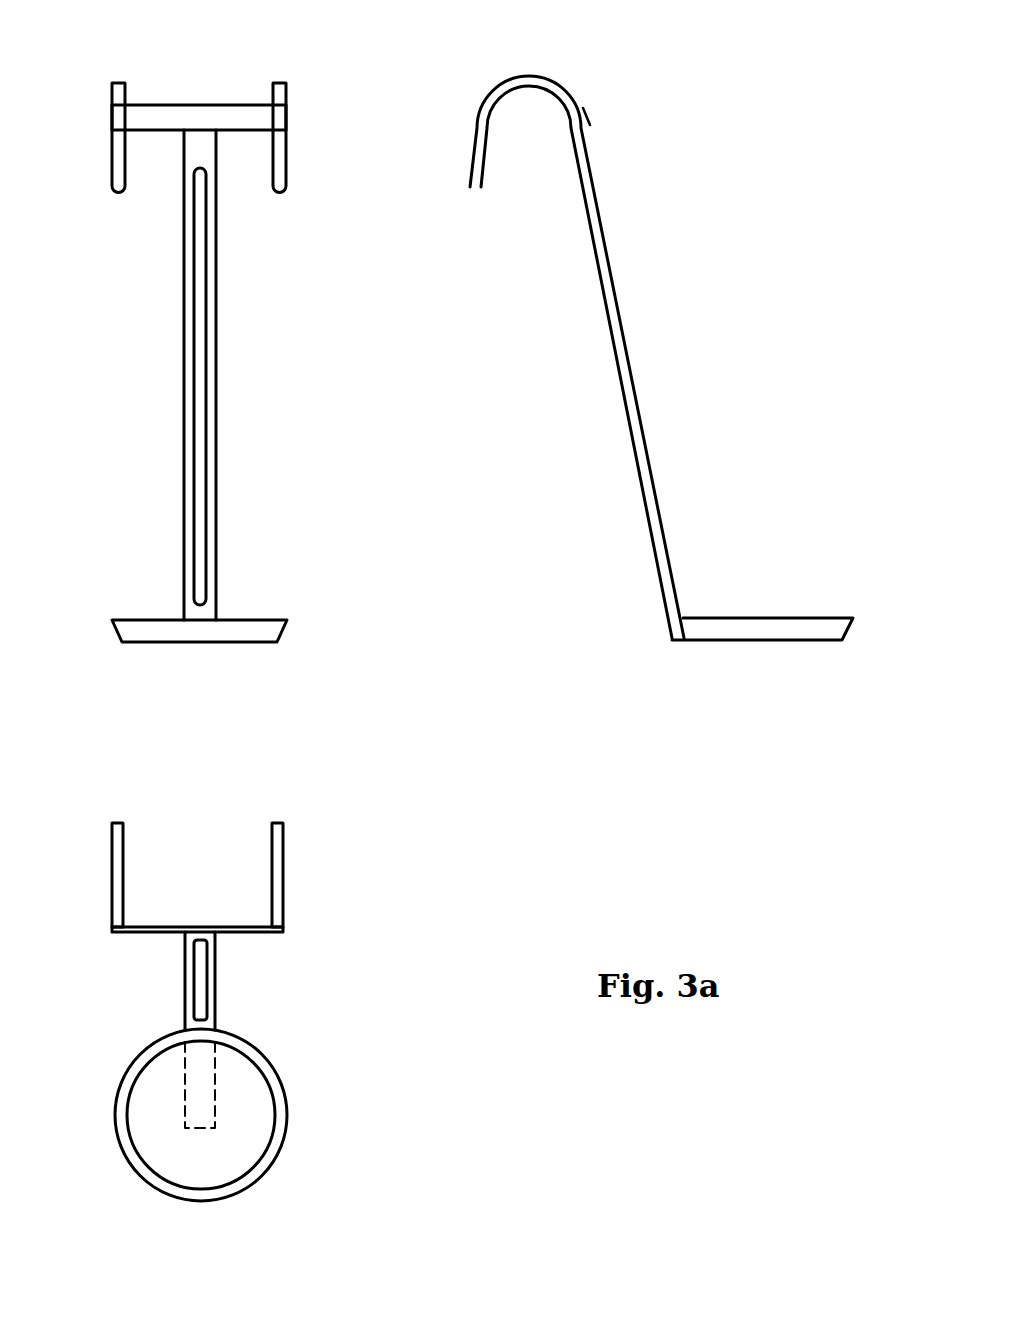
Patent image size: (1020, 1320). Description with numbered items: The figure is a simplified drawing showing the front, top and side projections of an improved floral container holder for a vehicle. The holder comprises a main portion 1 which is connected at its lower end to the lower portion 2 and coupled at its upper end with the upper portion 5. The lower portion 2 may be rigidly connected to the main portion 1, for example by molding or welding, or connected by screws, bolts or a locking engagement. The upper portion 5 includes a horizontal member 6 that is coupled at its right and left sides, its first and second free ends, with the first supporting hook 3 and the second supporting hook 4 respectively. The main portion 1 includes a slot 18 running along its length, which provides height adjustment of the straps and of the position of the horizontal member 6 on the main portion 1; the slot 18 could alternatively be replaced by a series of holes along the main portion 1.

The main portion 1 is at (215, 480).
The lower portion 2 is at (257, 630).
The first supporting hook 3 is at (287, 150).
The second supporting hook 4 is at (118, 178).
The upper portion 5 is at (462, 93).
The horizontal member 6 is at (180, 118).
The slot 18 is at (198, 352).